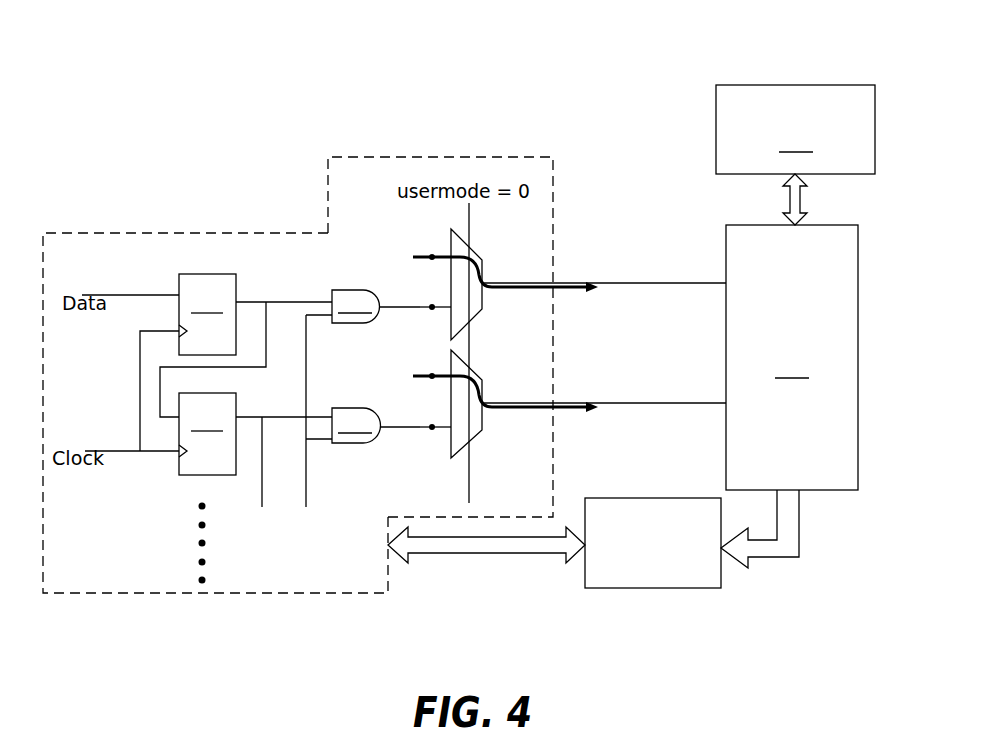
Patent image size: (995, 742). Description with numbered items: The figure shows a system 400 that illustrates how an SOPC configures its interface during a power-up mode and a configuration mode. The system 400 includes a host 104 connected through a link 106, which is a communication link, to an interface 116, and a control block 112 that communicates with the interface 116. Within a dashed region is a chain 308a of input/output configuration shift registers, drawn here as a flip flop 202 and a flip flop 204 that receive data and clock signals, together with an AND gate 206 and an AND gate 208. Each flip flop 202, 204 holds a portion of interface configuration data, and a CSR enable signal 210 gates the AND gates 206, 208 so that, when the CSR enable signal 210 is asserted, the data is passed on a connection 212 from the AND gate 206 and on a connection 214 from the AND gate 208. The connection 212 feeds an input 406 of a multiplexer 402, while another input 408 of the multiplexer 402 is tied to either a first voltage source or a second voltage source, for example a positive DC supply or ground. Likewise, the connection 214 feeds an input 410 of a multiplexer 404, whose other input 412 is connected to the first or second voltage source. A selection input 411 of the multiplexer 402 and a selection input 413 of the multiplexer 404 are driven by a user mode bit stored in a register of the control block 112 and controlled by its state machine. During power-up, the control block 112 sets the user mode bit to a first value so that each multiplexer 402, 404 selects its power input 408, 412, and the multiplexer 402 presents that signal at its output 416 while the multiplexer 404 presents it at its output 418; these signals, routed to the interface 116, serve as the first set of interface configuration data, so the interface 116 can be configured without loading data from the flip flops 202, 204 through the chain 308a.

The system 400 is at (562, 64).
The host 104 is at (795, 129).
The link 106 is at (786, 198).
The interface 116 is at (792, 357).
The control block 112 is at (660, 589).
The flip flop 202 is at (207, 314).
The flip flop 204 is at (207, 434).
The AND gate 206 is at (356, 306).
The AND gate 208 is at (356, 425).
The CSR enable signal 210 is at (322, 479).
The connection 212 is at (396, 305).
The connection 214 is at (396, 422).
The chain of IOCSRs 308a is at (295, 594).
The multiplexer 402 is at (478, 313).
The multiplexer 404 is at (478, 436).
The input 406 is at (444, 311).
The input 408 is at (436, 257).
The input 410 is at (444, 431).
The selection input 411 is at (469, 215).
The input 412 is at (436, 377).
The selection input 413 is at (469, 345).
The output 416 is at (541, 283).
The output 418 is at (541, 403).